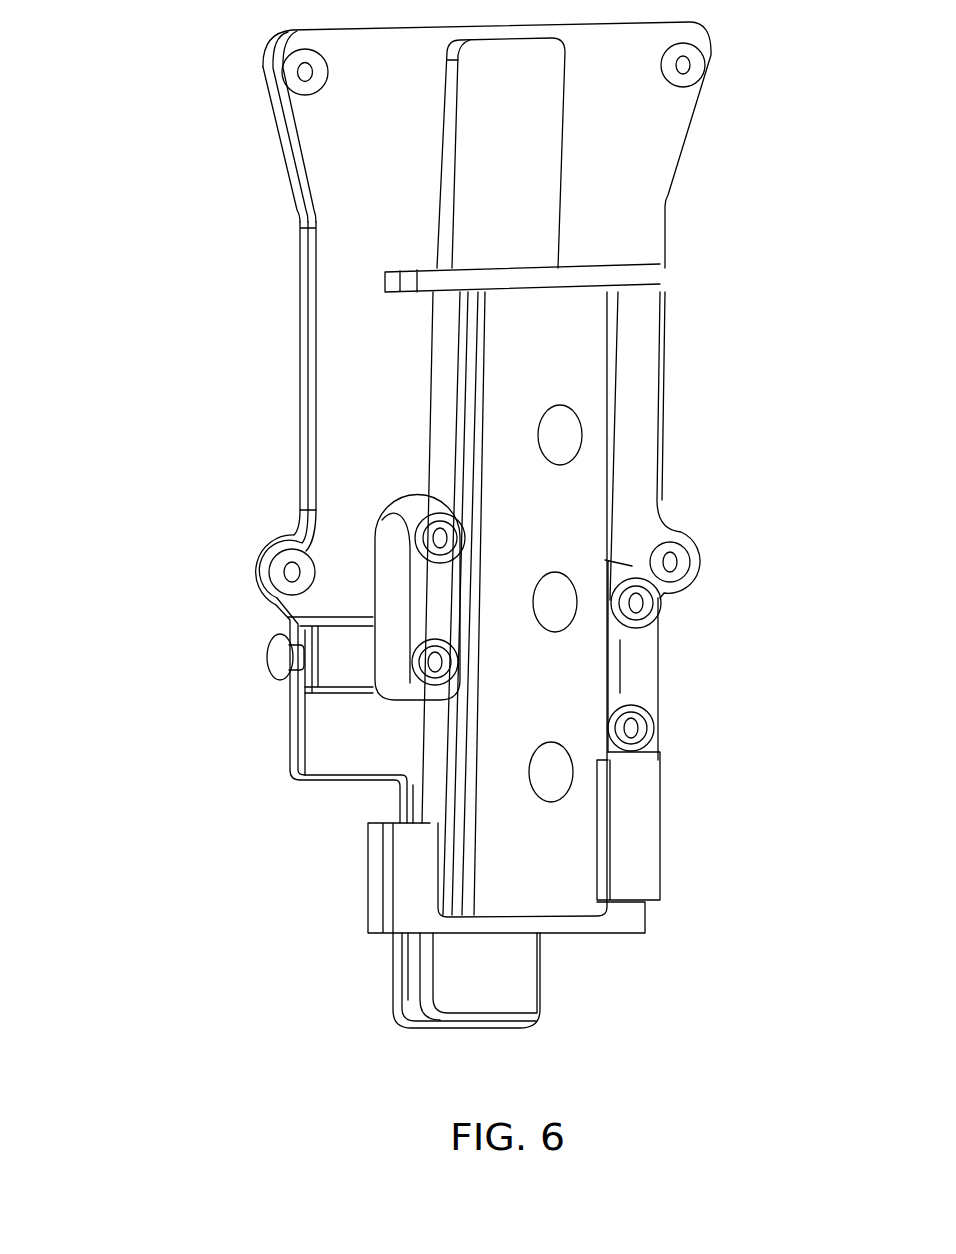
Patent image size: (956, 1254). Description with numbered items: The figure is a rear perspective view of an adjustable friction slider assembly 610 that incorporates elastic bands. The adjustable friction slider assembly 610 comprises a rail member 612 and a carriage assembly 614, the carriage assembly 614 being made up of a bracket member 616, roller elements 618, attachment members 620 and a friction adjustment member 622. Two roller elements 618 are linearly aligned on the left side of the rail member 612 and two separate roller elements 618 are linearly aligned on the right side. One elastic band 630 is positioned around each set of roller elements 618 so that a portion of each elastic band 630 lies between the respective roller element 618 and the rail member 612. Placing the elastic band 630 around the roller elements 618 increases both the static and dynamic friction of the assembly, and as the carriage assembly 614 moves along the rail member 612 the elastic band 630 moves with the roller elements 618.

The adjustable friction slider assembly 610 is at (173, 113).
The rail member 612 is at (563, 892).
The carriage assembly 614 is at (273, 400).
The bracket member 616 is at (645, 130).
The roller element 618 is at (373, 528).
The attachment member 620 is at (441, 528).
The friction adjustment member 622 is at (282, 655).
The elastic band 630 is at (366, 672).